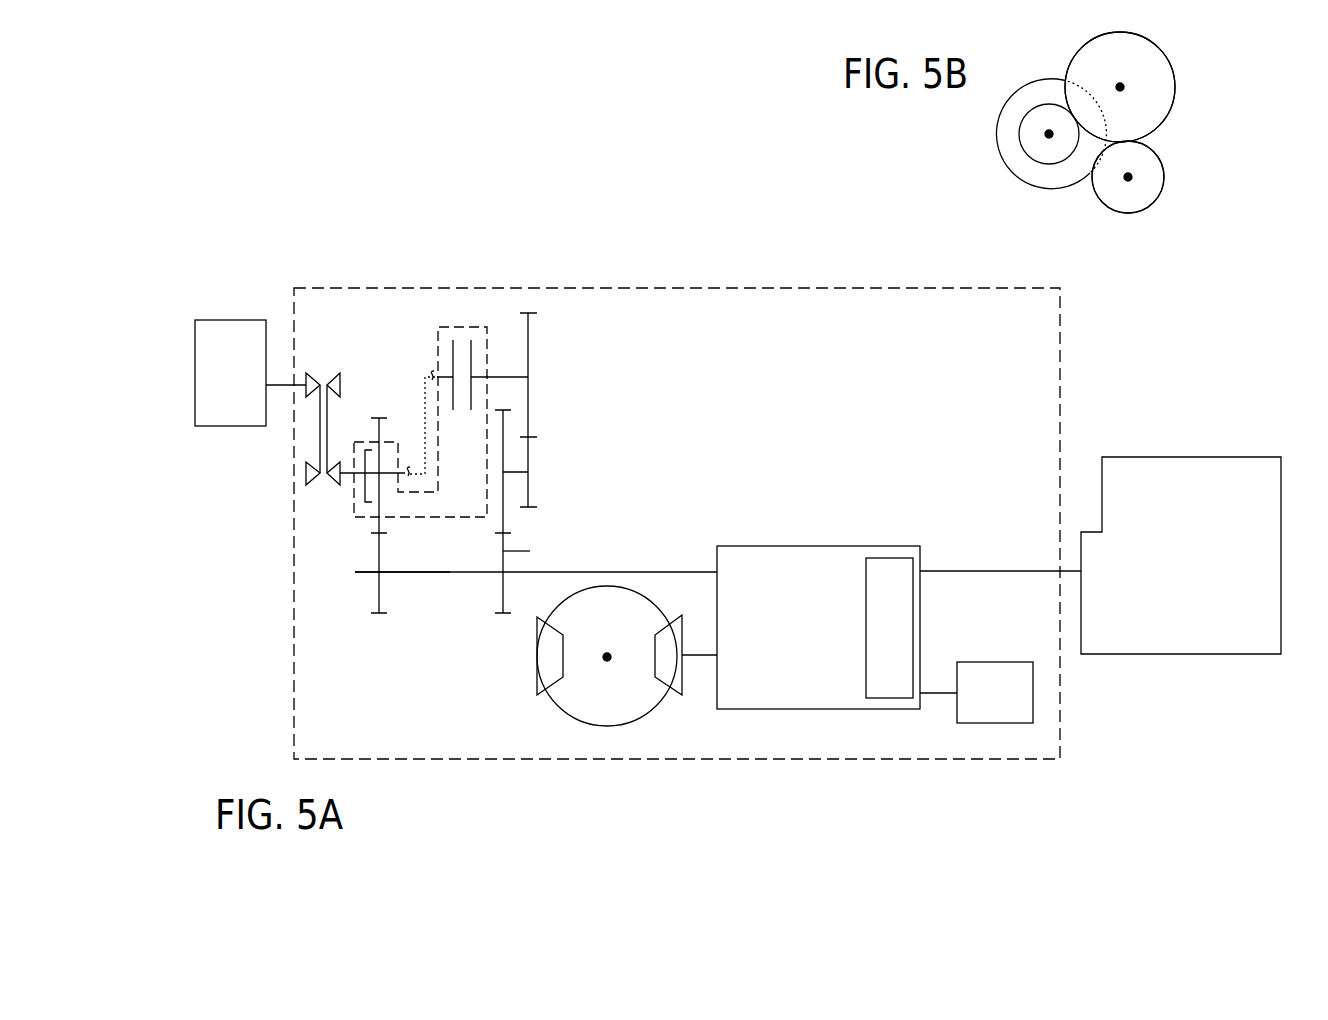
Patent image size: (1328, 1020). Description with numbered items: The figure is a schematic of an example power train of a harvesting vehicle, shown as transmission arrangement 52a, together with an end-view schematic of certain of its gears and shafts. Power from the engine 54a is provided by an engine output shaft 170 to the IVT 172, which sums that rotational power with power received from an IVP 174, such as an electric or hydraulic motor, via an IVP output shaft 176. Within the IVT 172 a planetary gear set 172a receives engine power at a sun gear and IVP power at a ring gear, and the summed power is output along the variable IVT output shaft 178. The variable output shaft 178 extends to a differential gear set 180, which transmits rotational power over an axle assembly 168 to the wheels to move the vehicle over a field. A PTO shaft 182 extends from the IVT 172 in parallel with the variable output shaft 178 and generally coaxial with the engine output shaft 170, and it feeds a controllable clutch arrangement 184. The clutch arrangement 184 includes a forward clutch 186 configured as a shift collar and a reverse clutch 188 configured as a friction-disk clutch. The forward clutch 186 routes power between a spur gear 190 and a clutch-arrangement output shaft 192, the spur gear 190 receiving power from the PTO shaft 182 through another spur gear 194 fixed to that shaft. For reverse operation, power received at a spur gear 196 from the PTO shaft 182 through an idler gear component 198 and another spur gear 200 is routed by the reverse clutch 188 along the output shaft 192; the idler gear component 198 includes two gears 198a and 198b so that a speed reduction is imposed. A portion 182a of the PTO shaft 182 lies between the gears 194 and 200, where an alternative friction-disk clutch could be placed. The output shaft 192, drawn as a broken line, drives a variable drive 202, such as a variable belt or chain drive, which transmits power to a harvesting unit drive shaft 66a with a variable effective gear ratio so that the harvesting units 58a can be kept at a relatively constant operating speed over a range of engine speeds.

In FIG. 5A, the transmission arrangement 52a is at (1060, 410).
In FIG. 5A, the engine 54a is at (1155, 654).
In FIG. 5A, the harvesting units 58a is at (215, 320).
In FIG. 5A, the harvesting unit drive shaft 66a is at (278, 385).
In FIG. 5A, the axle assembly 168 is at (605, 659).
In FIG. 5A, the engine output shaft 170 is at (970, 571).
In FIG. 5A, the IVT 172 is at (873, 546).
In FIG. 5A, the planetary gear set 172a is at (888, 698).
In FIG. 5A, the IVP 174 is at (1017, 723).
In FIG. 5A, the IVP output shaft 176 is at (937, 693).
In FIG. 5A, the IVT output shaft 178 is at (700, 655).
In FIG. 5A, the differential gear set 180 is at (592, 725).
In FIG. 5A, the PTO shaft 182 is at (670, 570).
In FIG. 5B, the PTO shaft 182 is at (1128, 177).
In FIG. 5A, the portion of the PTO shaft 182a is at (418, 574).
In FIG. 5A, the clutch arrangement 184 is at (467, 327).
In FIG. 5A, the forward clutch 186 is at (357, 497).
In FIG. 5A, the reverse clutch 188 is at (472, 352).
In FIG. 5A, the spur gear 190 is at (399, 430).
In FIG. 5B, the spur gear 190 is at (1172, 117).
In FIG. 5A, the clutch-arrangement output shaft 192 is at (352, 437).
In FIG. 5B, the clutch-arrangement output shaft 192 is at (1118, 87).
In FIG. 5A, the spur gear 194 is at (380, 598).
In FIG. 5B, the spur gear 194 is at (1127, 213).
In FIG. 5A, the spur gear 196 is at (529, 343).
In FIG. 5B, the spur gear 196 is at (1120, 87).
In FIG. 5A, the idler gear component 198 is at (547, 437).
In FIG. 5A, the gear 198a is at (530, 490).
In FIG. 5B, the gear 198a is at (1017, 143).
In FIG. 5A, the gear 198b is at (502, 508).
In FIG. 5B, the gear 198b is at (1012, 170).
In FIG. 5A, the spur gear 200 is at (530, 551).
In FIG. 5B, the spur gear 200 is at (1128, 177).
In FIG. 5A, the variable drive 202 is at (303, 444).